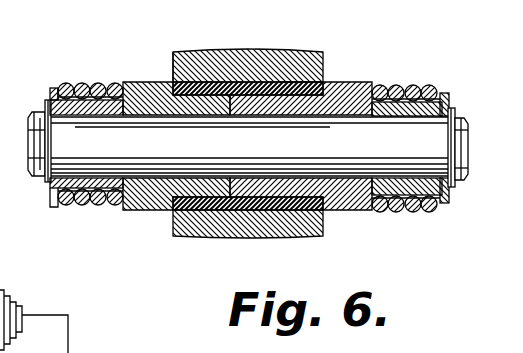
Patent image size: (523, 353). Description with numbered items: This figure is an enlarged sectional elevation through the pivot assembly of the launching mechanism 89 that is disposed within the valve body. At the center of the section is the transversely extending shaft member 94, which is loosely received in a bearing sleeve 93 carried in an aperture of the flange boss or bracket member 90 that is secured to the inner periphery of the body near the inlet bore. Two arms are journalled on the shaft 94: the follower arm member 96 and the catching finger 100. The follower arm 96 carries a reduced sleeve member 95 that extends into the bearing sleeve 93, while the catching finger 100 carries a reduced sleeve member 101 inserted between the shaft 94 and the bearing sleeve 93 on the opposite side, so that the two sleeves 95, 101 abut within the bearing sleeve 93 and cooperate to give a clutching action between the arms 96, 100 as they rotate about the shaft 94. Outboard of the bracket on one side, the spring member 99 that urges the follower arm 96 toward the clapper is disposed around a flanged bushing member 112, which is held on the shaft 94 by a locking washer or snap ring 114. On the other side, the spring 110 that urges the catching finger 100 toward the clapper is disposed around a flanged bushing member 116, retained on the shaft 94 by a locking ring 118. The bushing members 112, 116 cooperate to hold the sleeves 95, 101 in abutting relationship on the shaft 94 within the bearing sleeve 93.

The launching mechanism 89 is at (181, 60).
The bracket member 90 is at (209, 58).
The bearing sleeve 93 is at (250, 88).
The shaft member 94 is at (45, 178).
The reduced sleeve member 95 is at (175, 230).
The follower arm member 96 is at (146, 208).
The spring member 99 is at (78, 206).
The catching finger 100 is at (351, 92).
The reduced sleeve member 101 is at (288, 88).
The spring 110 is at (421, 213).
The flanged bushing member 112 is at (55, 90).
The locking washer or snap ring 114 is at (45, 107).
The flanged bushing member 116 is at (412, 92).
The locking ring 118 is at (452, 190).